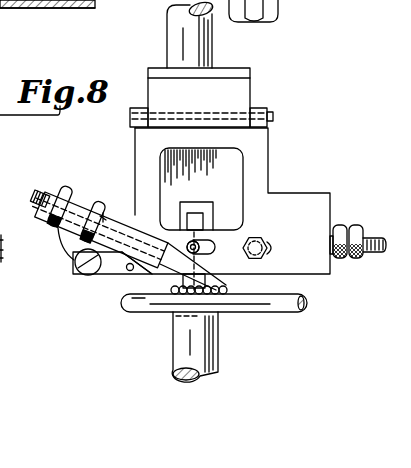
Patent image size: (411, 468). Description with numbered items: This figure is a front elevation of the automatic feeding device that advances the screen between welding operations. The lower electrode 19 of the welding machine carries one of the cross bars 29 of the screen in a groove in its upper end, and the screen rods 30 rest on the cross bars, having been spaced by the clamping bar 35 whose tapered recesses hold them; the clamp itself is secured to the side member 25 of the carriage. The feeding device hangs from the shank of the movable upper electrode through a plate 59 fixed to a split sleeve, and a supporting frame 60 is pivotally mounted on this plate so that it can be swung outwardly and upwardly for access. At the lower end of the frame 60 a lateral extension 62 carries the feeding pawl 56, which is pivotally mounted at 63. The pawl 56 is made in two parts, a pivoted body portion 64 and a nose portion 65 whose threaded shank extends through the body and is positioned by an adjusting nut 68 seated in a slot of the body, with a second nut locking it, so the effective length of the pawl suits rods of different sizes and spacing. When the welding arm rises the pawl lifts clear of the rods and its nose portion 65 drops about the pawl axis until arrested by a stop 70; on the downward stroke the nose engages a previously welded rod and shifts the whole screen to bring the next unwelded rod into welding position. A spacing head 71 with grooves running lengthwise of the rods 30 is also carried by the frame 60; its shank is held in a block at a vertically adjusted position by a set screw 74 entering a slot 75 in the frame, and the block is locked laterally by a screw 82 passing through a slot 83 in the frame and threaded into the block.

The electrode 19 is at (215, 353).
The side member 25 is at (72, 9).
The cross bar 29 is at (285, 307).
The rod 30 is at (230, 290).
The clamping bar 35 is at (281, 0).
The pawl 56 is at (157, 277).
The plate 59 is at (243, 92).
The supporting frame 60 is at (263, 163).
The lateral extension 62 is at (88, 245).
The pivot 63 is at (77, 263).
The body portion 64 is at (72, 248).
The nose portion 65 is at (215, 268).
The adjusting nut 68 is at (95, 215).
The stop 70 is at (118, 270).
The spacing head 71 is at (198, 222).
The set screw 74 is at (202, 243).
The slot 75 is at (212, 247).
The screw 82 is at (253, 237).
The slot 83 is at (275, 246).